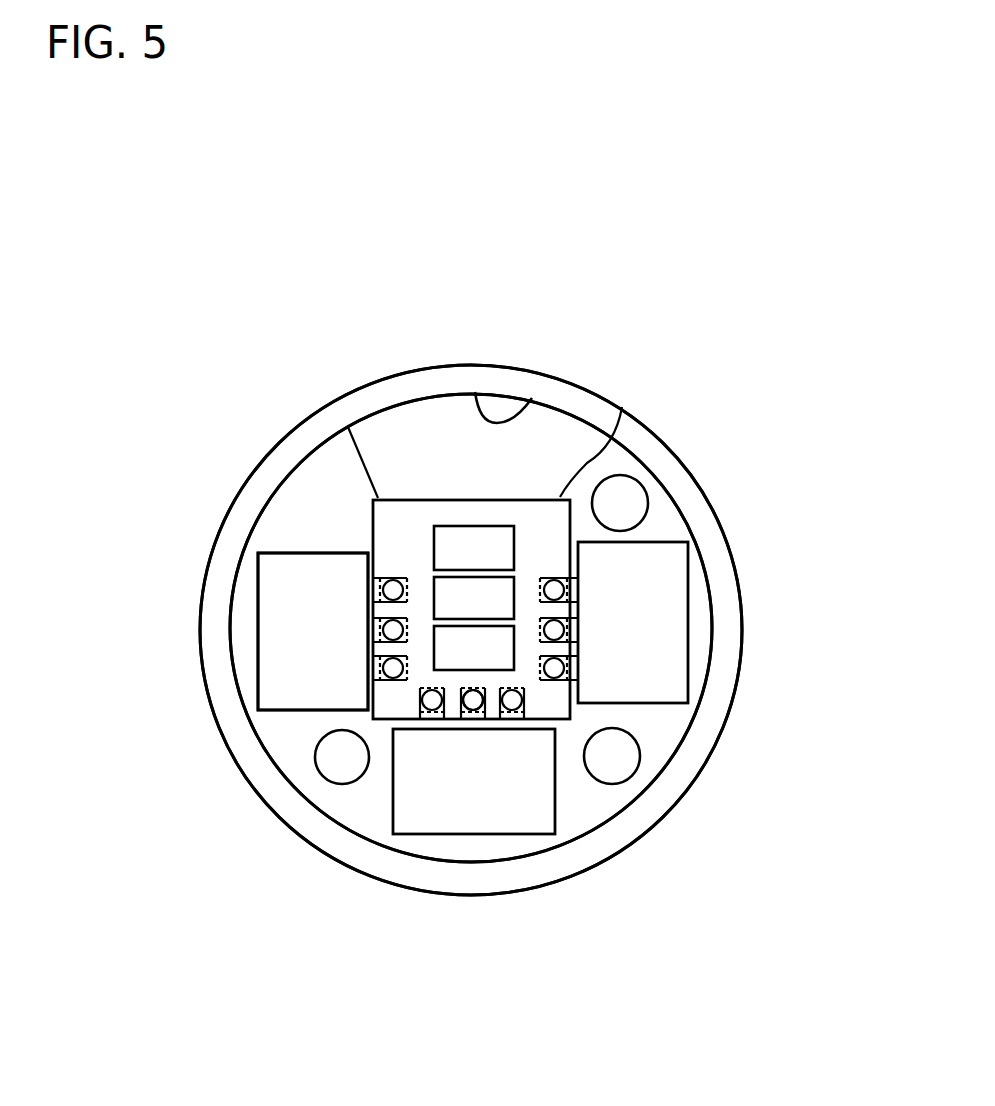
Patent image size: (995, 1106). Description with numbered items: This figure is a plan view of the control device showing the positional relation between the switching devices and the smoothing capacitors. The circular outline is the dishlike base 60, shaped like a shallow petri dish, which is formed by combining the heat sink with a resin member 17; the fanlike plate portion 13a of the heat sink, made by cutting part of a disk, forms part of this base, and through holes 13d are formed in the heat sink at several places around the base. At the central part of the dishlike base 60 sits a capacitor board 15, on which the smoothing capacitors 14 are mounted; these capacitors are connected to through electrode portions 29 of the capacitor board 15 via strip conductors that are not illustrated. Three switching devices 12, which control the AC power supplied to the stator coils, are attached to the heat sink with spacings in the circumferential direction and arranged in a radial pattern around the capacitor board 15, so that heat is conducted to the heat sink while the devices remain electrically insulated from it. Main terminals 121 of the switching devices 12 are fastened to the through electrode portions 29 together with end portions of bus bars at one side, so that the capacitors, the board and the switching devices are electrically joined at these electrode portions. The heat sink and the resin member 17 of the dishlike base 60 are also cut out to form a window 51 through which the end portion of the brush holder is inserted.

The dishlike base 60 is at (429, 364).
The resin member 17 is at (732, 663).
The capacitor board 15 is at (622, 407).
The window 51 is at (535, 497).
The smoothing capacitors 14 is at (477, 557).
The through electrode portions 29 is at (512, 702).
The main terminals 121 is at (462, 720).
The switching devices 12 is at (297, 635).
The plate portion 13a is at (323, 523).
The through holes 13d is at (636, 498).